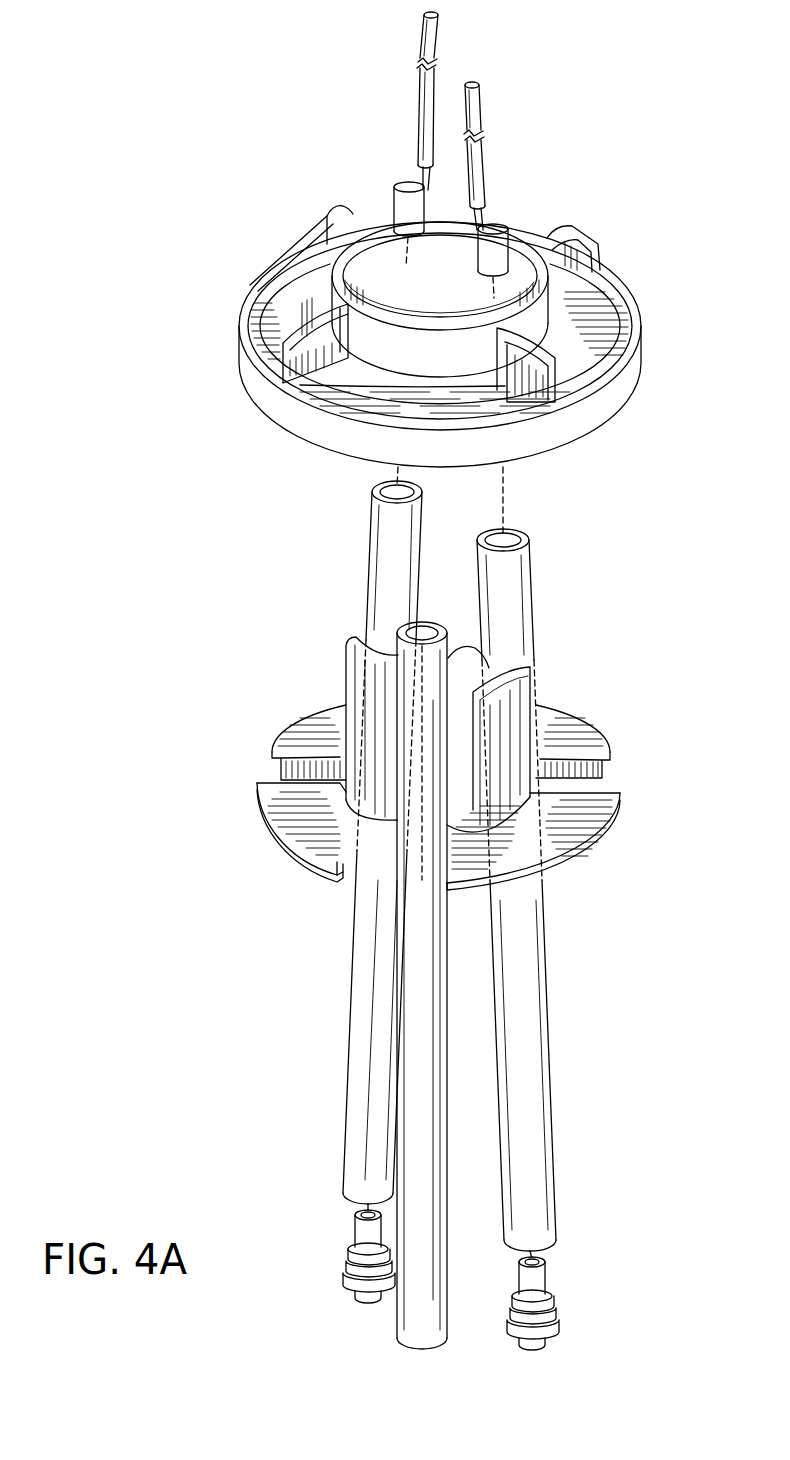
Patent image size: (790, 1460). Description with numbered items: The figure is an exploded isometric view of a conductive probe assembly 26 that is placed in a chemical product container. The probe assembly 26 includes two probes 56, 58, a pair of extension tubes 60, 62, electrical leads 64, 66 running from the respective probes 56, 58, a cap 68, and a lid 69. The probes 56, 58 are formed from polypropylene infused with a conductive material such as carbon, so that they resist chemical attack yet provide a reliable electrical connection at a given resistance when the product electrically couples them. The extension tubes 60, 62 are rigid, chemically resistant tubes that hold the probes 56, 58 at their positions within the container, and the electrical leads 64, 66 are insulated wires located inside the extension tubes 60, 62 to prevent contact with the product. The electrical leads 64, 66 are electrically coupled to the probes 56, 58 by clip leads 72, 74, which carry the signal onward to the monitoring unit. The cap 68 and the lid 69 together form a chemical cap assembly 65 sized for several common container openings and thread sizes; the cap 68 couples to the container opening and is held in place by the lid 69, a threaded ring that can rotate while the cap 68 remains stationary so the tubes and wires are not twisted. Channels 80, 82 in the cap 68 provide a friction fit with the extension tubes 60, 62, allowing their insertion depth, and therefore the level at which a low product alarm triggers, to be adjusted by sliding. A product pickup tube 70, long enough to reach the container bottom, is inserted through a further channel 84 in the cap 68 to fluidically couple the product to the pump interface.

The probe assembly 26 is at (194, 922).
The probe 56 is at (343, 1285).
The probe 58 is at (561, 1331).
The extension tube 60 is at (370, 556).
The extension tube 62 is at (533, 590).
The electrical lead 64 is at (420, 72).
The chemical cap assembly 65 is at (276, 438).
The electrical lead 66 is at (484, 110).
The cap 68 is at (606, 844).
The lid 69 is at (634, 402).
The product pickup tube 70 is at (448, 1123).
The clip lead 72 is at (393, 188).
The clip lead 74 is at (508, 250).
The channel 80 is at (279, 779).
The channel 82 is at (608, 792).
The channel 84 is at (351, 848).